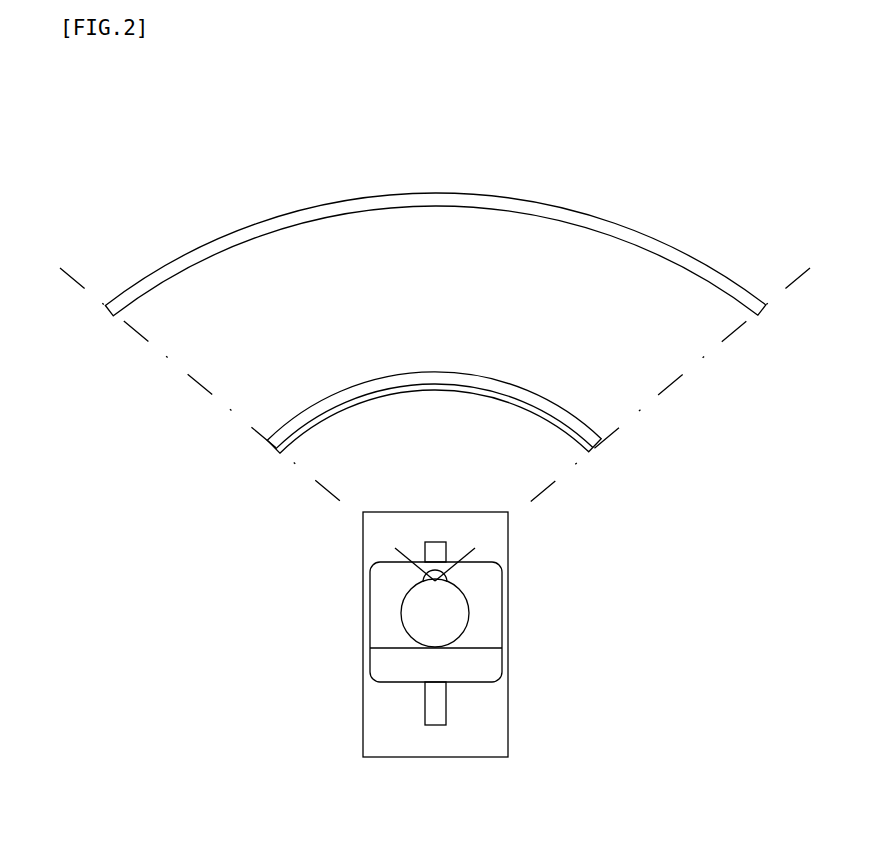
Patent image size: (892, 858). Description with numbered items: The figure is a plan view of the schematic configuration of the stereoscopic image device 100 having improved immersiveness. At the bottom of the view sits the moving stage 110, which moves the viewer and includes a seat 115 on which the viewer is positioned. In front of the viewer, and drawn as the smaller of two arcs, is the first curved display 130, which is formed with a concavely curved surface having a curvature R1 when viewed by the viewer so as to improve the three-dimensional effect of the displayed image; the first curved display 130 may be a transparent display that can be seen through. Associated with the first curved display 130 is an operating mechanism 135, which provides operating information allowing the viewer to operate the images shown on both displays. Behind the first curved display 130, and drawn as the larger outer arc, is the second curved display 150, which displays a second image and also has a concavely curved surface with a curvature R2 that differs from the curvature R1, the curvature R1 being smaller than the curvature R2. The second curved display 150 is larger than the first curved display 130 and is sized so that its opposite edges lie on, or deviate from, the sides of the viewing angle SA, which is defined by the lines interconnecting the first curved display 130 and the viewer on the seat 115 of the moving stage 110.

The stereoscopic image device 100 is at (318, 137).
The moving stage 110 is at (362, 713).
The seat 115 is at (377, 632).
The first curved display 130 is at (578, 414).
The operating mechanism 135 is at (533, 413).
The second curved display 150 is at (677, 248).
The curvature of the first curved display R1 is at (468, 392).
The curvature of the second curved display R2 is at (551, 216).
The viewing angle SA is at (473, 549).